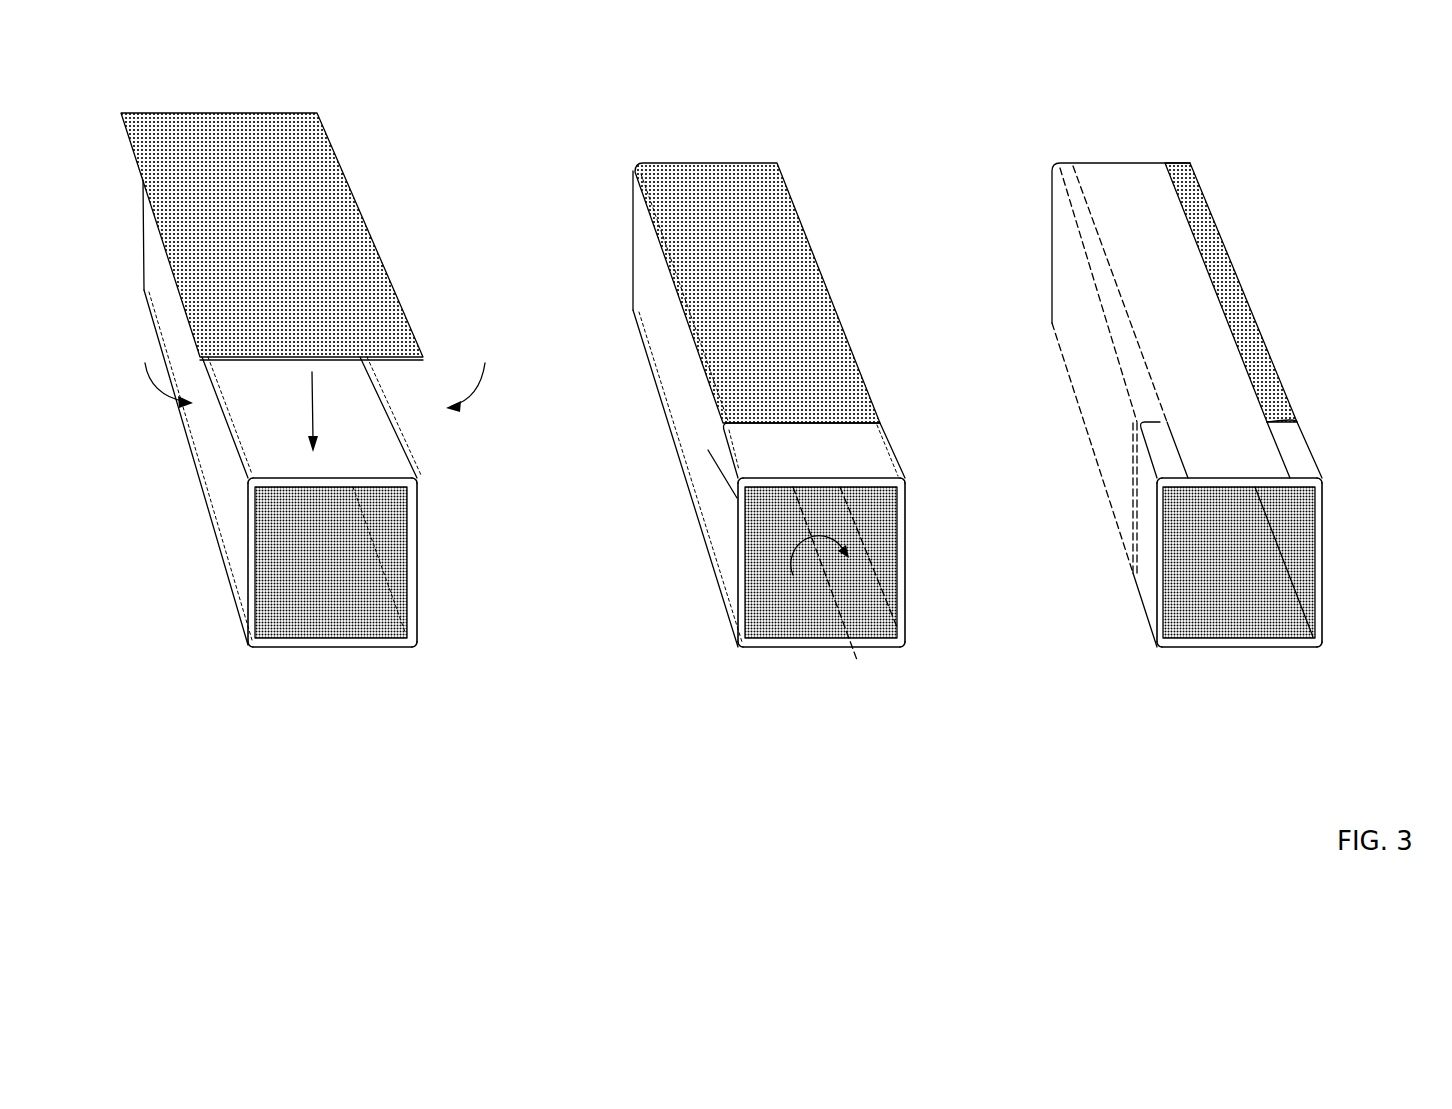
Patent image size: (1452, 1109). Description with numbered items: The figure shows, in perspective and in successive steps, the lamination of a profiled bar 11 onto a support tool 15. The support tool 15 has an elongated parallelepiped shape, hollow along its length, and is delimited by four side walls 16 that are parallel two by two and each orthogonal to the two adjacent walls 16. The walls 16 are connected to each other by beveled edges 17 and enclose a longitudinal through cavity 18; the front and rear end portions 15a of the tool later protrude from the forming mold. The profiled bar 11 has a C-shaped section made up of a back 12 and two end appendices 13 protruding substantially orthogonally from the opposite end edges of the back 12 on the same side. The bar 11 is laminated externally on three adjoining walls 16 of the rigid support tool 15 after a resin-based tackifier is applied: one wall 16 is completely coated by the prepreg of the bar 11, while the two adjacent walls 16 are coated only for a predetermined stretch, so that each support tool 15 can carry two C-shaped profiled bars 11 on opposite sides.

The profiled bar 11 is at (722, 370).
The back 12 is at (717, 180).
The end appendix 13 is at (672, 283).
The support tool 15 is at (774, 489).
The end portion 15a is at (382, 439).
The side wall 16 is at (357, 400).
The beveled edge 17 is at (250, 478).
The longitudinal through cavity 18 is at (322, 620).